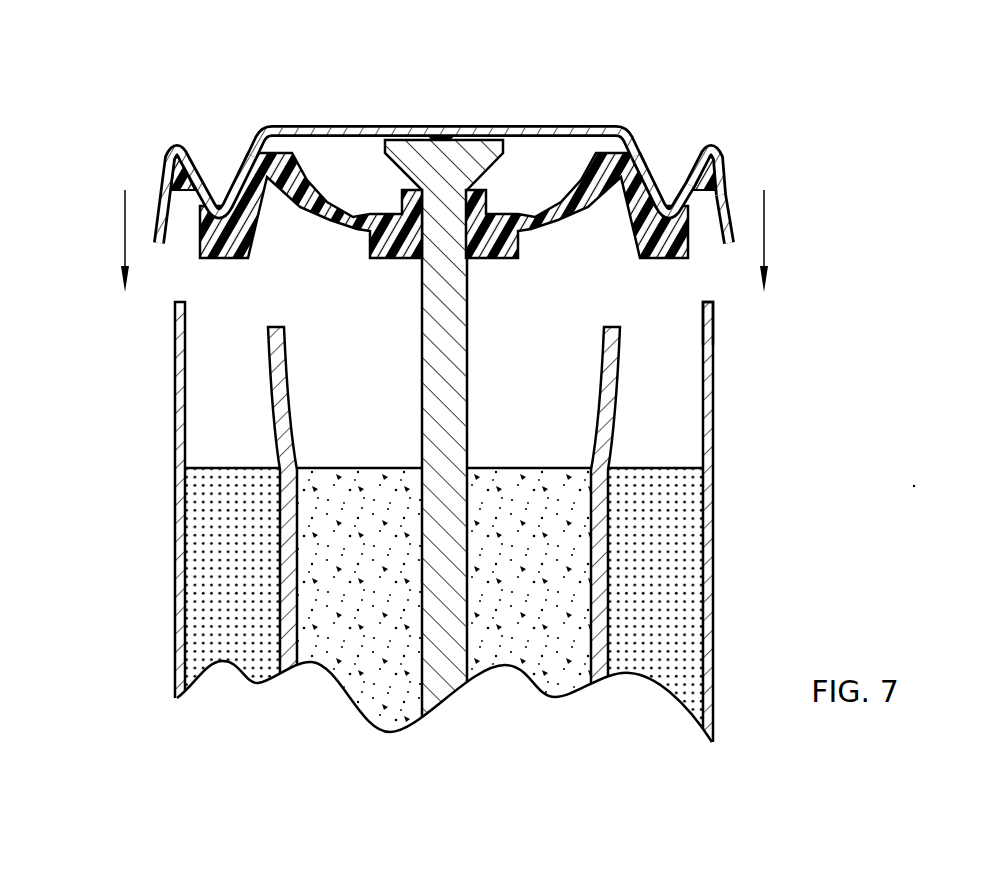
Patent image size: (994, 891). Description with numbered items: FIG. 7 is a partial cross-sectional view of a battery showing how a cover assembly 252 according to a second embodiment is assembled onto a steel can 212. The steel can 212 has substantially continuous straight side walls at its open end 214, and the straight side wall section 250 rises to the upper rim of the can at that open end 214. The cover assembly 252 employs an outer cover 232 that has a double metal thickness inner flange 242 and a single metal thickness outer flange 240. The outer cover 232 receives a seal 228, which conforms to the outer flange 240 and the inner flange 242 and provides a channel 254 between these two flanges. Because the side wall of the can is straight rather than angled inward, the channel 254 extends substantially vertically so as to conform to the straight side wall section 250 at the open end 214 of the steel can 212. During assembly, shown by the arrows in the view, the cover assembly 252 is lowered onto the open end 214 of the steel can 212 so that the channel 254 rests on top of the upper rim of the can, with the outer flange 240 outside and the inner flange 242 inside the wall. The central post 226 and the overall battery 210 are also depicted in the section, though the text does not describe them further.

The container 210 is at (522, 449).
The steel can 212 is at (715, 447).
The open end 214 is at (700, 288).
The central post 226 is at (465, 308).
The seal 228 is at (330, 205).
The outer cover 232 is at (452, 128).
The outer flange 240 is at (728, 196).
The inner flange 242 is at (670, 198).
The straight side wall section 250 is at (715, 327).
The cover assembly 252 is at (155, 122).
The channel 254 is at (708, 188).